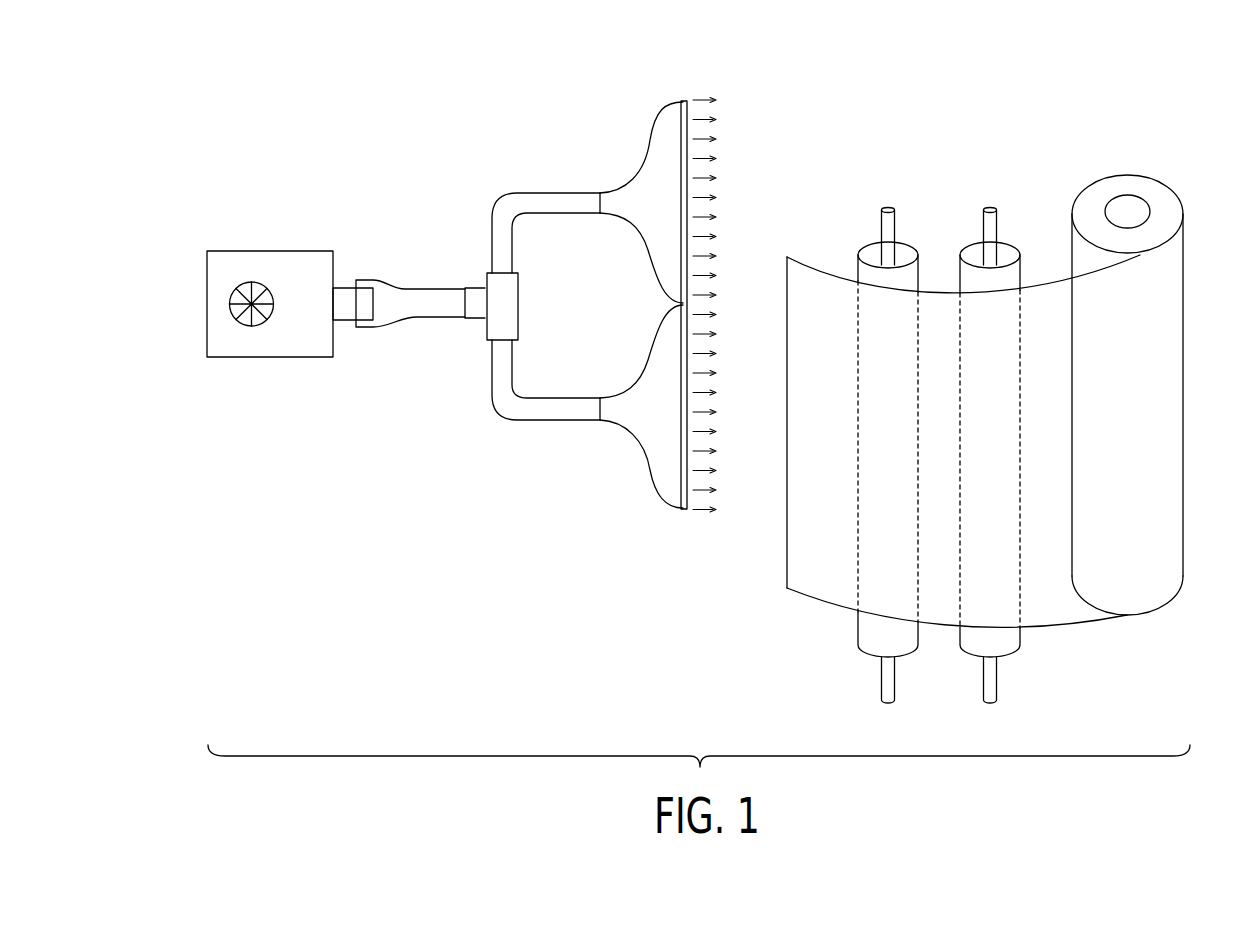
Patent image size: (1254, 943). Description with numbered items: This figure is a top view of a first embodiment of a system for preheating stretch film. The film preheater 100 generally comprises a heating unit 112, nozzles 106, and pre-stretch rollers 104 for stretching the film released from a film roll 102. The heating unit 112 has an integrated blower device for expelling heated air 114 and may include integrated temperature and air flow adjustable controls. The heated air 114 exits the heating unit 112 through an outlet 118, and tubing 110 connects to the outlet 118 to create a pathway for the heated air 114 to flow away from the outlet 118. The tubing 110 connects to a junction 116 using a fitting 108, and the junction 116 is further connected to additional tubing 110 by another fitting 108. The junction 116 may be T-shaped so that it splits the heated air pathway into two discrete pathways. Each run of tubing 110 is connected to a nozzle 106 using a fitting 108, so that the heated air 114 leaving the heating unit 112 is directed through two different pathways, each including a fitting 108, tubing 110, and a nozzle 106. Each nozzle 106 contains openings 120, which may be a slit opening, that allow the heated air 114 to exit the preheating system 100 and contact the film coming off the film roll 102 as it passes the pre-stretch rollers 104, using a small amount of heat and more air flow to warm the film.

The film preheater 100 is at (489, 73).
The film roll 102 is at (1165, 600).
The pre-stretch rollers 104 is at (905, 240).
The nozzles 106 is at (660, 110).
The fitting 108 is at (460, 320).
The tubing 110 is at (402, 285).
The heating unit 112 is at (290, 250).
The heated air 114 is at (697, 512).
The junction 116 is at (520, 313).
The outlet 118 is at (343, 320).
The openings 120 is at (687, 101).